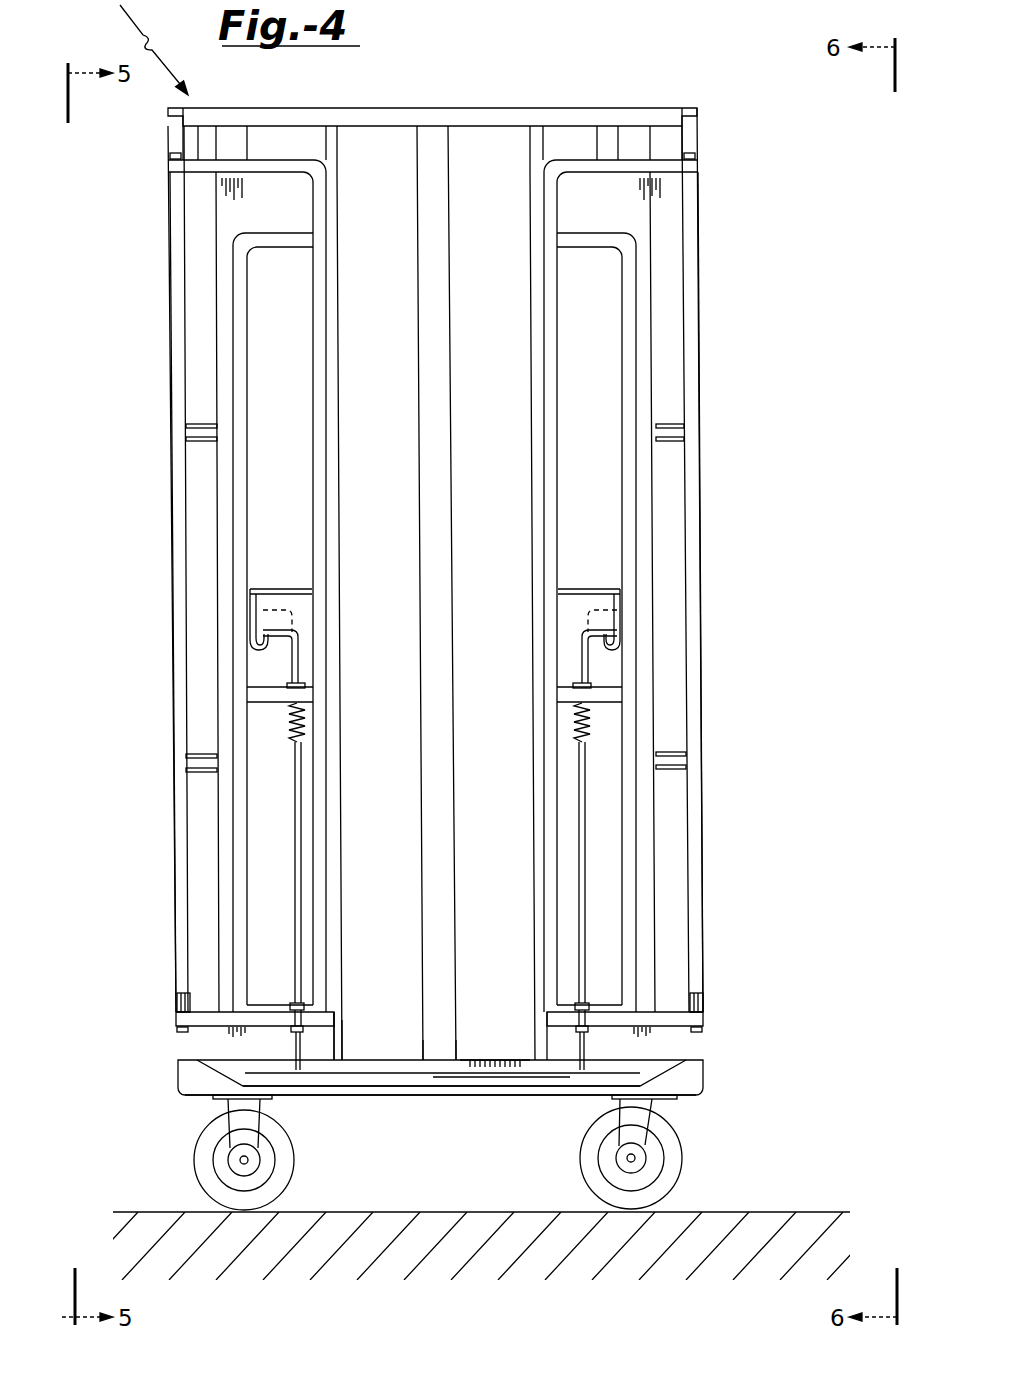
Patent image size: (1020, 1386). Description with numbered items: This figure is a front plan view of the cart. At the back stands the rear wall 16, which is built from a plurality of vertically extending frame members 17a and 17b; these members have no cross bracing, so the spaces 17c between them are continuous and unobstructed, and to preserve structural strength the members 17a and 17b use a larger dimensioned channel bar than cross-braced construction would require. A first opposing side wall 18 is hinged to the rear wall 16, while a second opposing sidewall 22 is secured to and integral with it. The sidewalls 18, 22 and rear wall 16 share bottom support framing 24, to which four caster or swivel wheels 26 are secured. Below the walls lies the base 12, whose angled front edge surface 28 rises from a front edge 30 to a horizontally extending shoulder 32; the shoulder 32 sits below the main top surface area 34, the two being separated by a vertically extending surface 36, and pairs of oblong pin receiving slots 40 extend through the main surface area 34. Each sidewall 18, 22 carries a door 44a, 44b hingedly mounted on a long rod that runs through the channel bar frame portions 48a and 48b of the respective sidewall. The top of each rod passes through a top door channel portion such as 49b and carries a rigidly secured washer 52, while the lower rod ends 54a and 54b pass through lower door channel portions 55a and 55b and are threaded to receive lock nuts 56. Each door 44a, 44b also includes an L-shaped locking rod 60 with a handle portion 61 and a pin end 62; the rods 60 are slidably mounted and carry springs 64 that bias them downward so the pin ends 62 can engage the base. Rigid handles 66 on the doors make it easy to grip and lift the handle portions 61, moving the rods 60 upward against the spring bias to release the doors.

The base 12 is at (407, 1045).
The rear wall 16 is at (452, 100).
The vertically extending frame member 17a is at (330, 133).
The vertically extending frame member 17b is at (233, 137).
The space 17c is at (300, 219).
The first opposing side wall 18 is at (712, 512).
The second opposing sidewall 22 is at (165, 516).
The bottom support framing 24 is at (180, 1075).
The caster or swivel wheel 26 is at (196, 1177).
The angled front edge surface 28 is at (355, 1075).
The front edge 30 is at (376, 1092).
The horizontally extending shoulder 32 is at (465, 1058).
The main top surface area 34 is at (357, 1058).
The vertically extending surface 36 is at (330, 1060).
The pin receiving slots 40 is at (146, 47).
The door 44a is at (538, 394).
The door 44b is at (336, 362).
The channel bar frame portion 48a is at (705, 805).
The channel bar frame portion 48b is at (172, 835).
The top door channel portion 49b is at (200, 125).
The washer 52 is at (170, 156).
The lower rod end 54a is at (704, 1000).
The lower rod end 54b is at (176, 1000).
The lower door channel portion 55a is at (704, 1012).
The lower door channel portion 55b is at (176, 1020).
The lock nut 56 is at (178, 1030).
The L-shaped locking rod 60 is at (311, 881).
The handle portion 61 is at (277, 628).
The pin end 62 is at (298, 1070).
The spring 64 is at (306, 725).
The rigid handle 66 is at (298, 588).